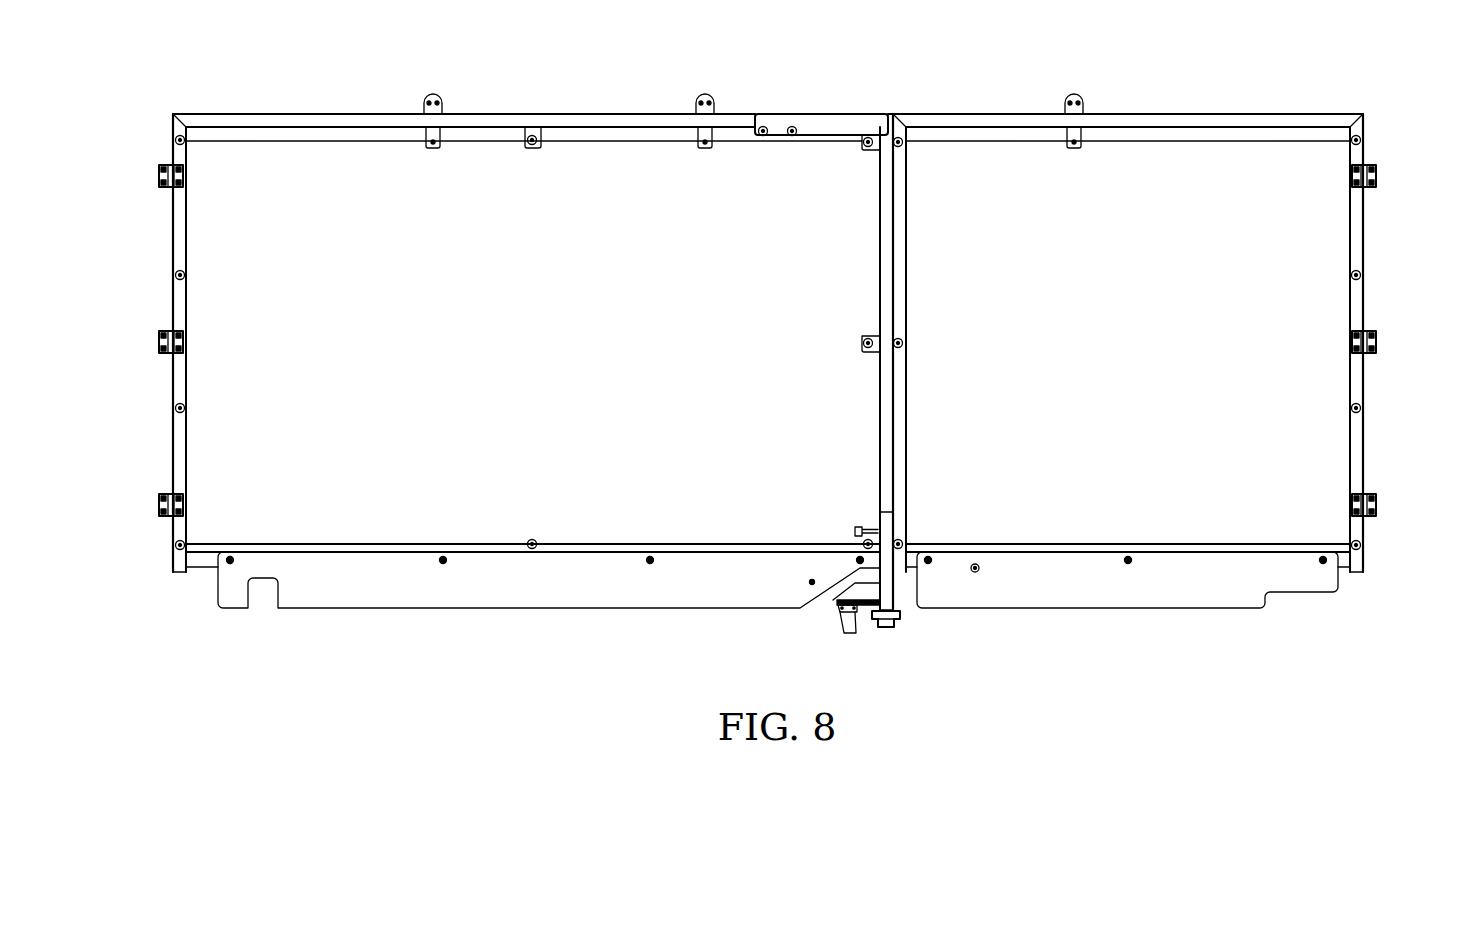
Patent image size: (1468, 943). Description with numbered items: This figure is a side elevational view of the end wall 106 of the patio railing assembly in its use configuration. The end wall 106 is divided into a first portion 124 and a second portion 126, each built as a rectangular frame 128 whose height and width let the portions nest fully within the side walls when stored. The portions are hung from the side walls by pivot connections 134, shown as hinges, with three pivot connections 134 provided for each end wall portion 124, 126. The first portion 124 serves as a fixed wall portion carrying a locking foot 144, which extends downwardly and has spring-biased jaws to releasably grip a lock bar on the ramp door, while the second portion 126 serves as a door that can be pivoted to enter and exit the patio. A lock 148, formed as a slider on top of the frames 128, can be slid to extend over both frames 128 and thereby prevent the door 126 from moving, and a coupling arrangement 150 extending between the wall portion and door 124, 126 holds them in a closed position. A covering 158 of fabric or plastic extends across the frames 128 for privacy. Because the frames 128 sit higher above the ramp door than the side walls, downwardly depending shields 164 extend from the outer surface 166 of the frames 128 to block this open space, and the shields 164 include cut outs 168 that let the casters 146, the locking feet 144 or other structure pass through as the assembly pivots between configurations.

The end wall 106 is at (908, 90).
The first portion 124 is at (332, 112).
The second portion 126 is at (1186, 112).
The rectangular frame 128 is at (237, 112).
The pivot connection 134 is at (159, 178).
The locking foot 144 is at (898, 627).
The caster 146 is at (837, 630).
The lock 148 is at (879, 100).
The coupling arrangement 150 is at (938, 226).
The covering 158 is at (467, 535).
The shield 164 is at (591, 597).
The outer surface 166 is at (180, 462).
The cut out 168 is at (290, 598).